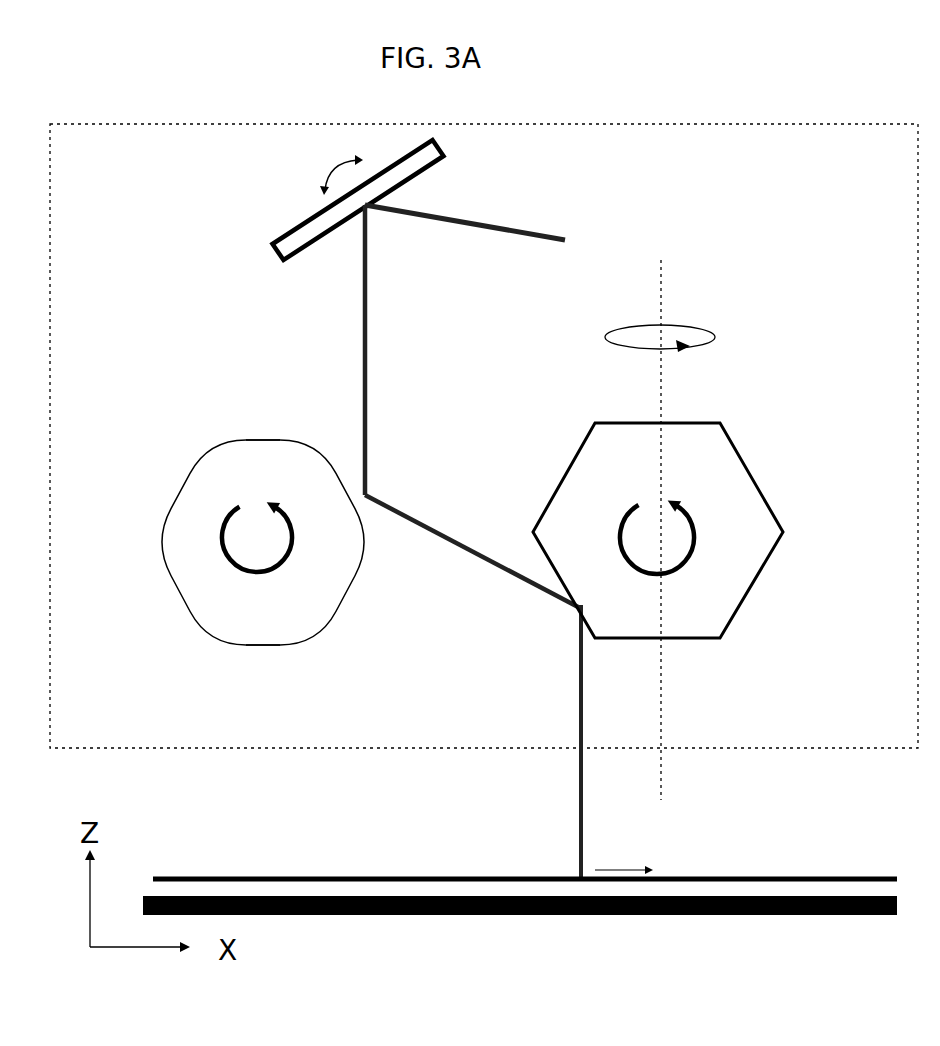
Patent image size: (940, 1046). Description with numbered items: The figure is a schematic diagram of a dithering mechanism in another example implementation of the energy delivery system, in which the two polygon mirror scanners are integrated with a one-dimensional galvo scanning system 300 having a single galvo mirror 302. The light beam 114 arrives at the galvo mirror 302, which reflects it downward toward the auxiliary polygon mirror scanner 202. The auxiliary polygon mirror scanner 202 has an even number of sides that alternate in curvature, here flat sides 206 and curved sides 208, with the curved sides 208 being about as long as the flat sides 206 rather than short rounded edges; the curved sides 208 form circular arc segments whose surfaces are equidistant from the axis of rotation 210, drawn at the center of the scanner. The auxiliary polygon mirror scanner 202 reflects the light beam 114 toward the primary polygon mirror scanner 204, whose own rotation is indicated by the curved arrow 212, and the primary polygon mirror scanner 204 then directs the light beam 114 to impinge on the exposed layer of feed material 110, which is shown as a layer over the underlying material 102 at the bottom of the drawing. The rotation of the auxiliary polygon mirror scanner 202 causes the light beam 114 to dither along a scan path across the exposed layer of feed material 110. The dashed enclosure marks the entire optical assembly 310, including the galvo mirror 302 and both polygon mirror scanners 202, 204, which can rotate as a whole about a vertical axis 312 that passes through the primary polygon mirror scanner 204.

The optical assembly 310 is at (770, 124).
The 1D galvo scanning system 300 is at (289, 194).
The galvo mirror 302 is at (283, 240).
The light beam 114 is at (370, 320).
The vertical axis 312 is at (655, 303).
The auxiliary polygon mirror scanner 202 is at (261, 552).
The flat sides 206 is at (232, 440).
The curved sides 208 is at (287, 640).
The axis of rotation 210 is at (265, 537).
The primary polygon mirror scanner 204 is at (710, 493).
The second rotation direction 212 is at (695, 550).
The exposed layer of feed material 110 is at (820, 883).
The substrate 102 is at (583, 898).